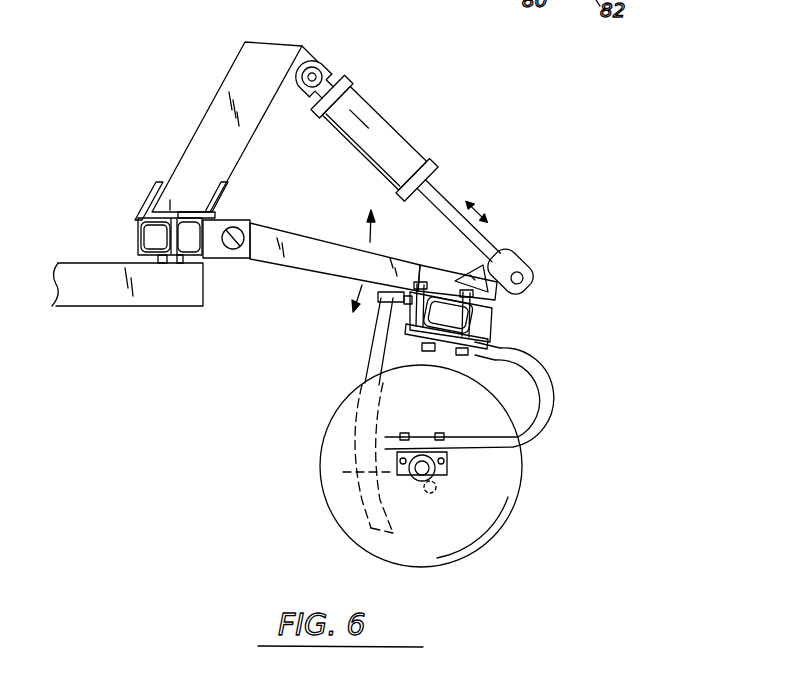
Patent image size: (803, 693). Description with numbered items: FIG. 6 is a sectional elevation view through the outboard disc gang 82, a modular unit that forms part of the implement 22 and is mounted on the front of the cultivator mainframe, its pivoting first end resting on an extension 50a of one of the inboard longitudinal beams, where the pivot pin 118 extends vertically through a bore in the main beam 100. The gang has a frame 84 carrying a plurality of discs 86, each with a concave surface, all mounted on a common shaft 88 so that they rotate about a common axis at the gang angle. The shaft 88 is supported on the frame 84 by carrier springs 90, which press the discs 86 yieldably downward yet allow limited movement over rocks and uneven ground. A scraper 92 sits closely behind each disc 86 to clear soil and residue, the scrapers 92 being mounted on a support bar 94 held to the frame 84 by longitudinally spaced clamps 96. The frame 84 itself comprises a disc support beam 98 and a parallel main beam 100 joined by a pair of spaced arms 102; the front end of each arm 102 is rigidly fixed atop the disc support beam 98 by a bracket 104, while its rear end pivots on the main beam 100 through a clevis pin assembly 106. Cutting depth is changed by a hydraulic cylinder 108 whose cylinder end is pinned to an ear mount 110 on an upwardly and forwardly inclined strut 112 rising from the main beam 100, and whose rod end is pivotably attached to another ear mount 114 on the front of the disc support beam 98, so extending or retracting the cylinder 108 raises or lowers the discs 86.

The row unit 22 is at (507, 175).
The extension of inboard longitudinal beam 50a is at (88, 300).
The outboard disc gang 82 is at (540, 468).
The frame 84 is at (278, 275).
The disc 86 is at (513, 517).
The shaft 88 is at (428, 472).
The carrier spring 90 is at (555, 380).
The scraper 92 is at (385, 351).
The support bar 94 is at (410, 293).
The clamp 96 is at (457, 277).
The disc support beam 98 is at (495, 325).
The main beam 100 is at (157, 212).
The arm 102 is at (338, 205).
The bracket 104 is at (490, 308).
The clevis pin assembly 106 is at (232, 235).
The hydraulic cylinder 108 is at (372, 122).
The ear mount 110 is at (300, 62).
The strut 112 is at (263, 45).
The ear mount 114 is at (495, 300).
The pivot pin 118 is at (163, 240).